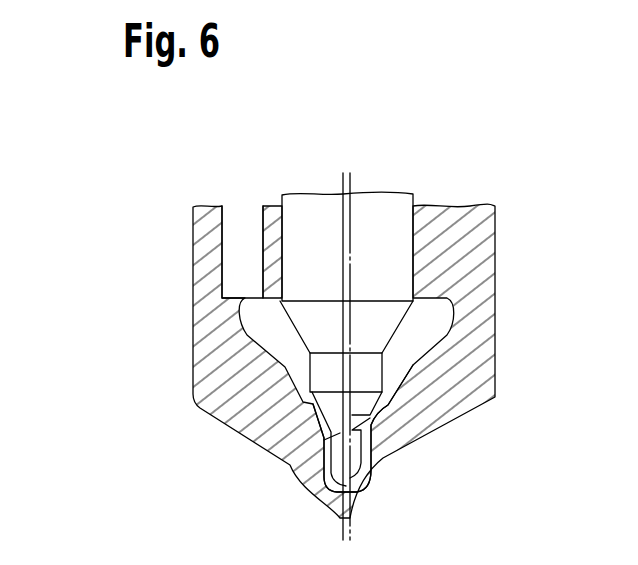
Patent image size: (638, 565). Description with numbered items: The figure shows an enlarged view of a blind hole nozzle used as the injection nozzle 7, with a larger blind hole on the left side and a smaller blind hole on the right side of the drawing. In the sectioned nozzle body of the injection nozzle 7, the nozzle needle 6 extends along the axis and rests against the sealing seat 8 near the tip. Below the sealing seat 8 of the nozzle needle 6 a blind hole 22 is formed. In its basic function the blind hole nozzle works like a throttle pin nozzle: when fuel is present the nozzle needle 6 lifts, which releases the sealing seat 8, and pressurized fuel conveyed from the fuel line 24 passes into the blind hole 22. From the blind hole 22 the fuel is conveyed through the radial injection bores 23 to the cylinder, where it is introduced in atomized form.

The nozzle needle 6 is at (372, 210).
The injection nozzle 7 is at (480, 251).
The sealing seat 8 is at (378, 423).
The blind hole 22 is at (337, 458).
The radial injection bores 23 is at (370, 463).
The fuel line 24 is at (240, 282).